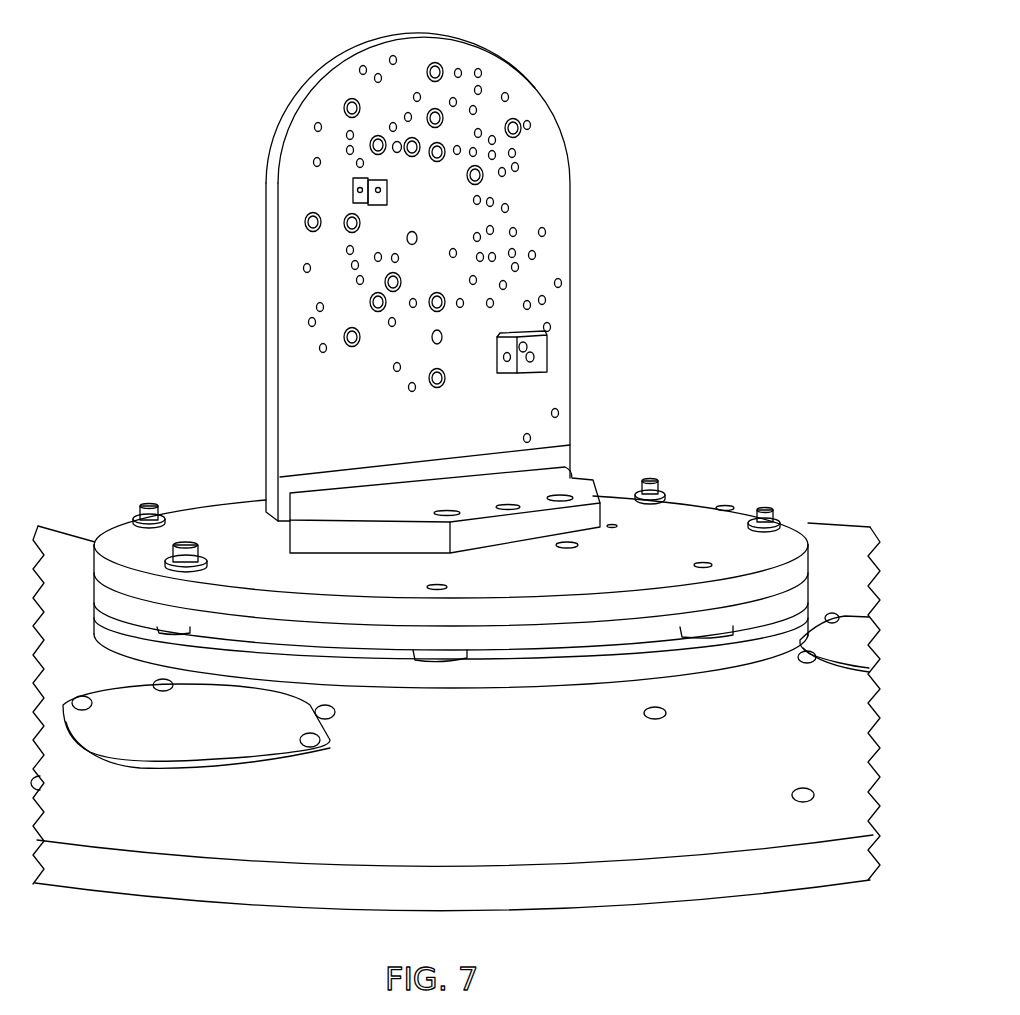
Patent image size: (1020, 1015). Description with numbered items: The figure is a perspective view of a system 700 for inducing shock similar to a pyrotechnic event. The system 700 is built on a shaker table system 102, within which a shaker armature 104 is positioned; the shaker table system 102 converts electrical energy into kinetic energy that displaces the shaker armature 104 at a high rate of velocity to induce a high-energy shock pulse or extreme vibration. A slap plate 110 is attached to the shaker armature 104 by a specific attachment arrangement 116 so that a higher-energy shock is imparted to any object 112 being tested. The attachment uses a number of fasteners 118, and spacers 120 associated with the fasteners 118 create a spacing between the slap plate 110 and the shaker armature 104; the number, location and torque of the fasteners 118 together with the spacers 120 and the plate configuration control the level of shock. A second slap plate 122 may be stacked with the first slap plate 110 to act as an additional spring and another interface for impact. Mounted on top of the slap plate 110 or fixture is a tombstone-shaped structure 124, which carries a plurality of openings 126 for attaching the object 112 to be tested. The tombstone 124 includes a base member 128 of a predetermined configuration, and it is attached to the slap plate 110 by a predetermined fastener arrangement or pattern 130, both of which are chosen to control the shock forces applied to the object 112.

The system for inducing shock 700 is at (455, 478).
The shaker table system 102 is at (740, 887).
The shaker armature 104 is at (672, 663).
The slap plate 110 is at (145, 612).
The object 112 is at (357, 190).
The specific attachment arrangement 116 is at (180, 475).
The fastener 118 is at (140, 511).
The spacer 120 is at (437, 655).
The second slap plate 122 is at (93, 553).
The tombstone-shaped structure 124 is at (266, 245).
The opening 126 is at (442, 71).
The base member 128 is at (606, 527).
The predetermined fastener arrangement 130 is at (445, 485).